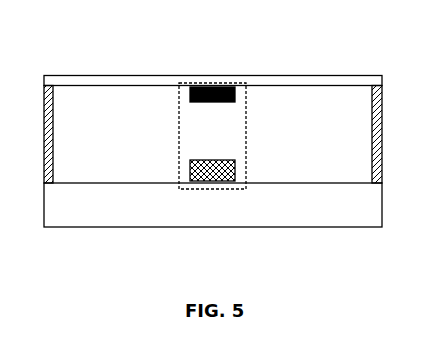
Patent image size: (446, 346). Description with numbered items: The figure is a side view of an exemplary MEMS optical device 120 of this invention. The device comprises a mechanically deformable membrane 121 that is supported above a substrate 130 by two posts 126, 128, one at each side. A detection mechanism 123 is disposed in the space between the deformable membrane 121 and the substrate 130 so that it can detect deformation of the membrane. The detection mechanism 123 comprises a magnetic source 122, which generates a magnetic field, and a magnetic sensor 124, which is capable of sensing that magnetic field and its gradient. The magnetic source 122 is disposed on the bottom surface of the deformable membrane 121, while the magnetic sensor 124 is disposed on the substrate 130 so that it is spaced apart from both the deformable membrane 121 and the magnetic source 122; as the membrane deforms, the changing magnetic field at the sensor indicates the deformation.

The MEMS optical device 120 is at (302, 59).
The mechanically deformable membrane 121 is at (99, 80).
The magnetic source 122 is at (215, 85).
The detection mechanism 123 is at (247, 133).
The magnetic sensor 124 is at (190, 172).
The post 126 is at (53, 142).
The post 128 is at (372, 140).
The substrate 130 is at (240, 208).